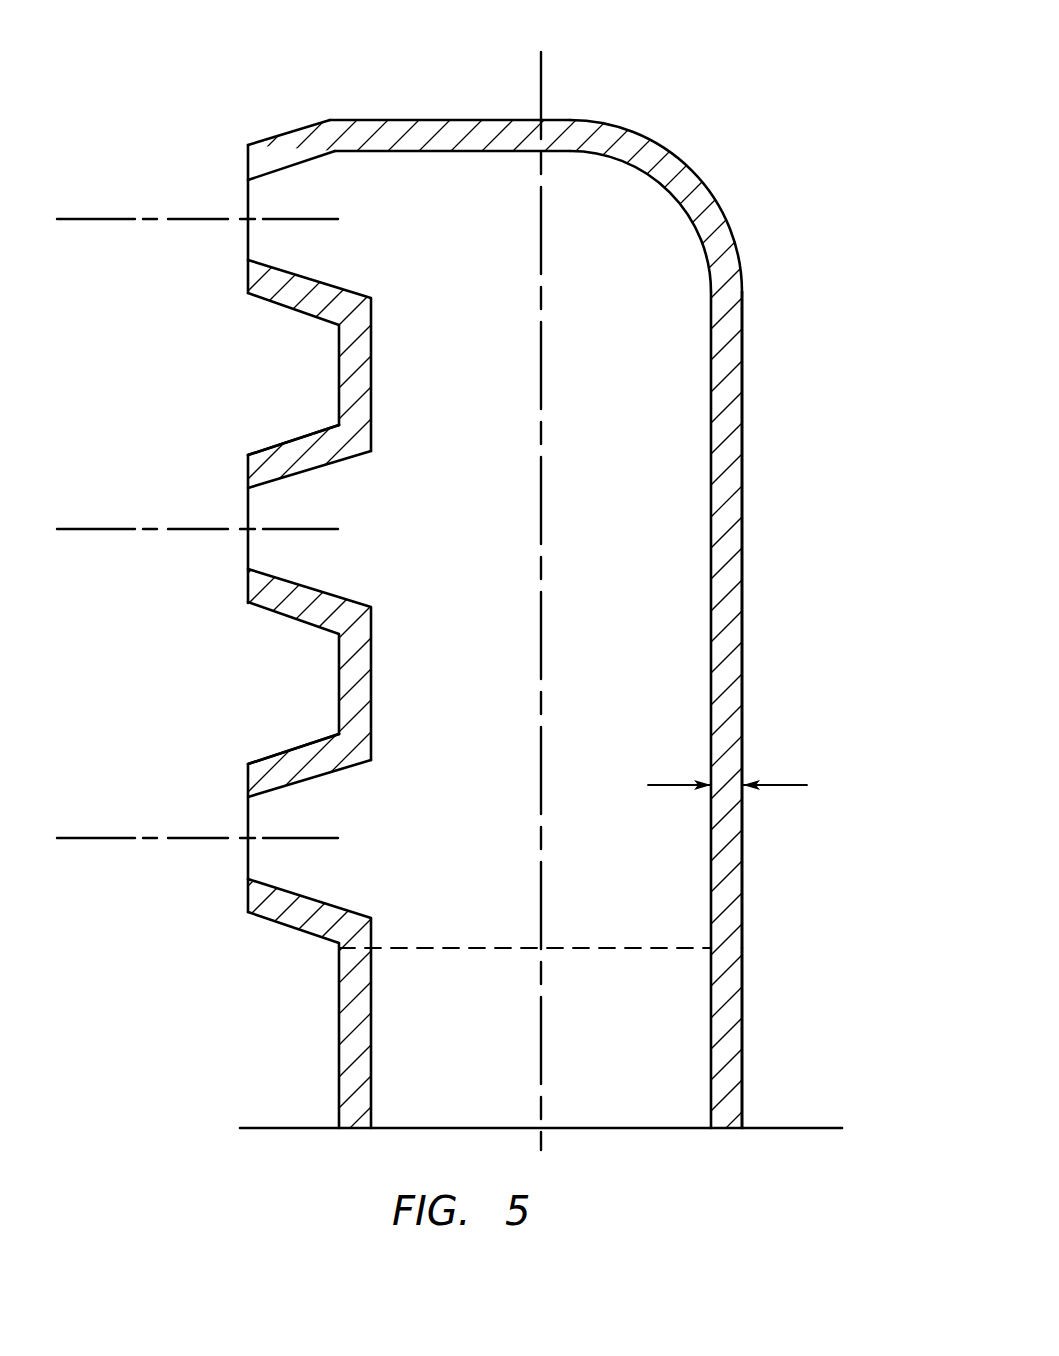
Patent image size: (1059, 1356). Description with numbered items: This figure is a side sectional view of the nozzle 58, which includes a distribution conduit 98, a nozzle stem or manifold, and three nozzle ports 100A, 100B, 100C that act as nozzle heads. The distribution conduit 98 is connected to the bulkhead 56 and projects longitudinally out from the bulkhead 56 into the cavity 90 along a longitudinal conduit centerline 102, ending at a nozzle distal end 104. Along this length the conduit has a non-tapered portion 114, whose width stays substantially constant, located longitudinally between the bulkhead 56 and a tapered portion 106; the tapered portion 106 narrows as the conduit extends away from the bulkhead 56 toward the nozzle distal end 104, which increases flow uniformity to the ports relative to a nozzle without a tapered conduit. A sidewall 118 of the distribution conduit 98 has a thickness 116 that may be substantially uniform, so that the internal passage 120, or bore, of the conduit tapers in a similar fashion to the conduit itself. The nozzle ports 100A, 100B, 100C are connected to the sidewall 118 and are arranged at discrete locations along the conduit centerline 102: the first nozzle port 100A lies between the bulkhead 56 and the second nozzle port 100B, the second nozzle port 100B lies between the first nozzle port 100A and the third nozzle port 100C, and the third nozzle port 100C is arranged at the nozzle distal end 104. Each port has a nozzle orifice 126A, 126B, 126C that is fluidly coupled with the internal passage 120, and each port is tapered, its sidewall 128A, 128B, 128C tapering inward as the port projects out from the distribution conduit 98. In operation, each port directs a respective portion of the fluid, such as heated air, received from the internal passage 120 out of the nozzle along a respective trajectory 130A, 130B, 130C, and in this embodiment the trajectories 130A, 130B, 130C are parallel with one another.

The bulkhead 56 is at (800, 1127).
The nozzle 58 is at (726, 104).
The cavity 90 is at (99, 678).
The distribution conduit 98 is at (745, 268).
The first nozzle port 100A is at (287, 752).
The second nozzle port 100B is at (287, 446).
The third nozzle port 100C is at (290, 128).
The longitudinal conduit centerline 102 is at (541, 72).
The nozzle distal end 104 is at (573, 120).
The tapered portion 106 is at (752, 620).
The non-tapered portion 114 is at (752, 997).
The thickness 116 is at (786, 786).
The sidewall 118 is at (743, 685).
The internal passage 120 is at (630, 582).
The first nozzle orifice 126A is at (265, 867).
The second nozzle orifice 126B is at (265, 550).
The third nozzle orifice 126C is at (265, 240).
The first nozzle port sidewall 128A is at (260, 769).
The second nozzle port sidewall 128B is at (260, 460).
The third nozzle port sidewall 128C is at (273, 297).
The first trajectory 130A is at (80, 837).
The second trajectory 130B is at (80, 527).
The third trajectory 130C is at (79, 219).